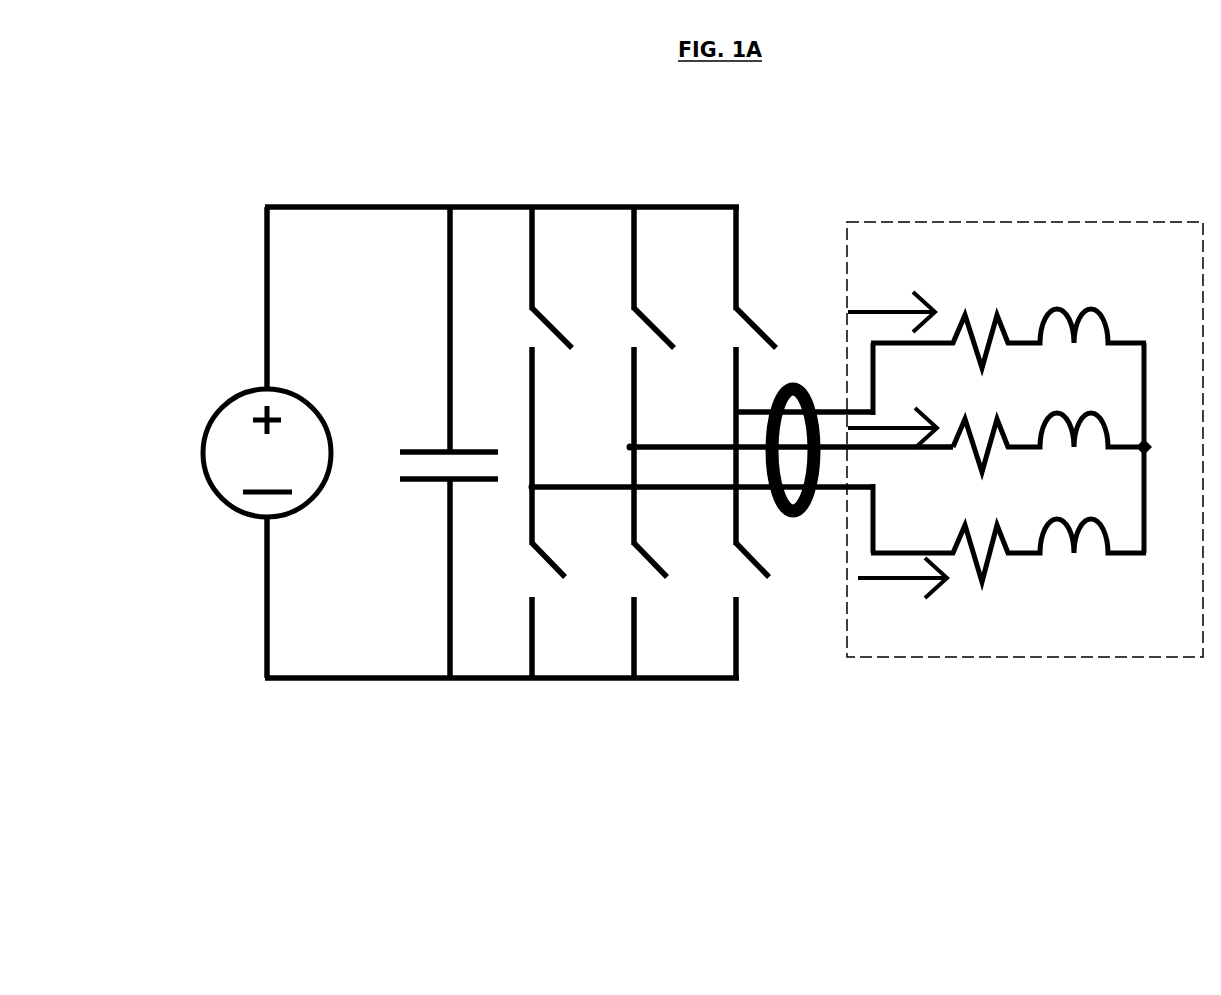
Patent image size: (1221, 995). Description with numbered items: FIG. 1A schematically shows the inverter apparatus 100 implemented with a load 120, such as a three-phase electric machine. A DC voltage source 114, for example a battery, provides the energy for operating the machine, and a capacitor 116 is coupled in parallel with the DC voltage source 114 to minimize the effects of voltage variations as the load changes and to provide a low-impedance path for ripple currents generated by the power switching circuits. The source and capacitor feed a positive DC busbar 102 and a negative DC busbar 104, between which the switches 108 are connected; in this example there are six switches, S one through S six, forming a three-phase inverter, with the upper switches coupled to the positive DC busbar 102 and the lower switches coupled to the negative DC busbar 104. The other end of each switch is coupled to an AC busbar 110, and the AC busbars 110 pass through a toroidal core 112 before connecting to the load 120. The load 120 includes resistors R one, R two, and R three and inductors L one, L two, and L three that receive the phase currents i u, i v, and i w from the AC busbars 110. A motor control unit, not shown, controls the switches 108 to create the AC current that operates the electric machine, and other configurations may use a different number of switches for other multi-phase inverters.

The inverter apparatus 100 is at (254, 112).
The positive DC busbar 102 is at (492, 205).
The negative DC busbar 104 is at (495, 681).
The switches 108 is at (570, 265).
The AC busbars 110 is at (828, 392).
The toroidal core 112 is at (802, 517).
The DC voltage source 114 is at (264, 437).
The capacitor 116 is at (448, 442).
The load 120 is at (1010, 221).